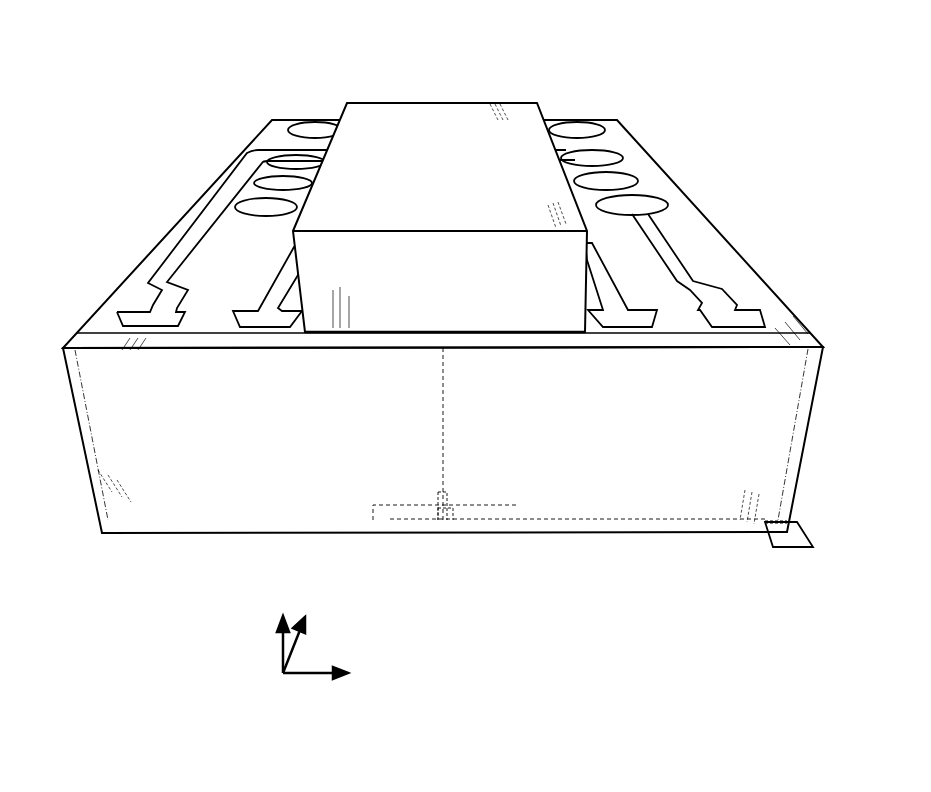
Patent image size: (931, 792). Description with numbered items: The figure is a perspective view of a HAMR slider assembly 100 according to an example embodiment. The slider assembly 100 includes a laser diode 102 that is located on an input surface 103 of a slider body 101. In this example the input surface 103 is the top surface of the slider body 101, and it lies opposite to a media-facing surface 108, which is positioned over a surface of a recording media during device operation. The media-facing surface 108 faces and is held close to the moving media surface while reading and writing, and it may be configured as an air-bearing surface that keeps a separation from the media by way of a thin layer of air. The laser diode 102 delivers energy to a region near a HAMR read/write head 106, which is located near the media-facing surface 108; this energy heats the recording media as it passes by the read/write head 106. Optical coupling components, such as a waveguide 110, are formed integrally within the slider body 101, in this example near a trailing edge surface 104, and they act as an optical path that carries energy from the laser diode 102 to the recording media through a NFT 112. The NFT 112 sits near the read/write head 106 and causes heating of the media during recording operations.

The HAMR slider assembly 100 is at (623, 68).
The slider body 101 is at (246, 147).
The laser diode 102 is at (364, 102).
The input surface 103 is at (128, 293).
The trailing edge surface 104 is at (162, 510).
The read/write head 106 is at (448, 521).
The media-facing surface 108 is at (806, 548).
The waveguide 110 is at (443, 415).
The NFT 112 is at (440, 521).